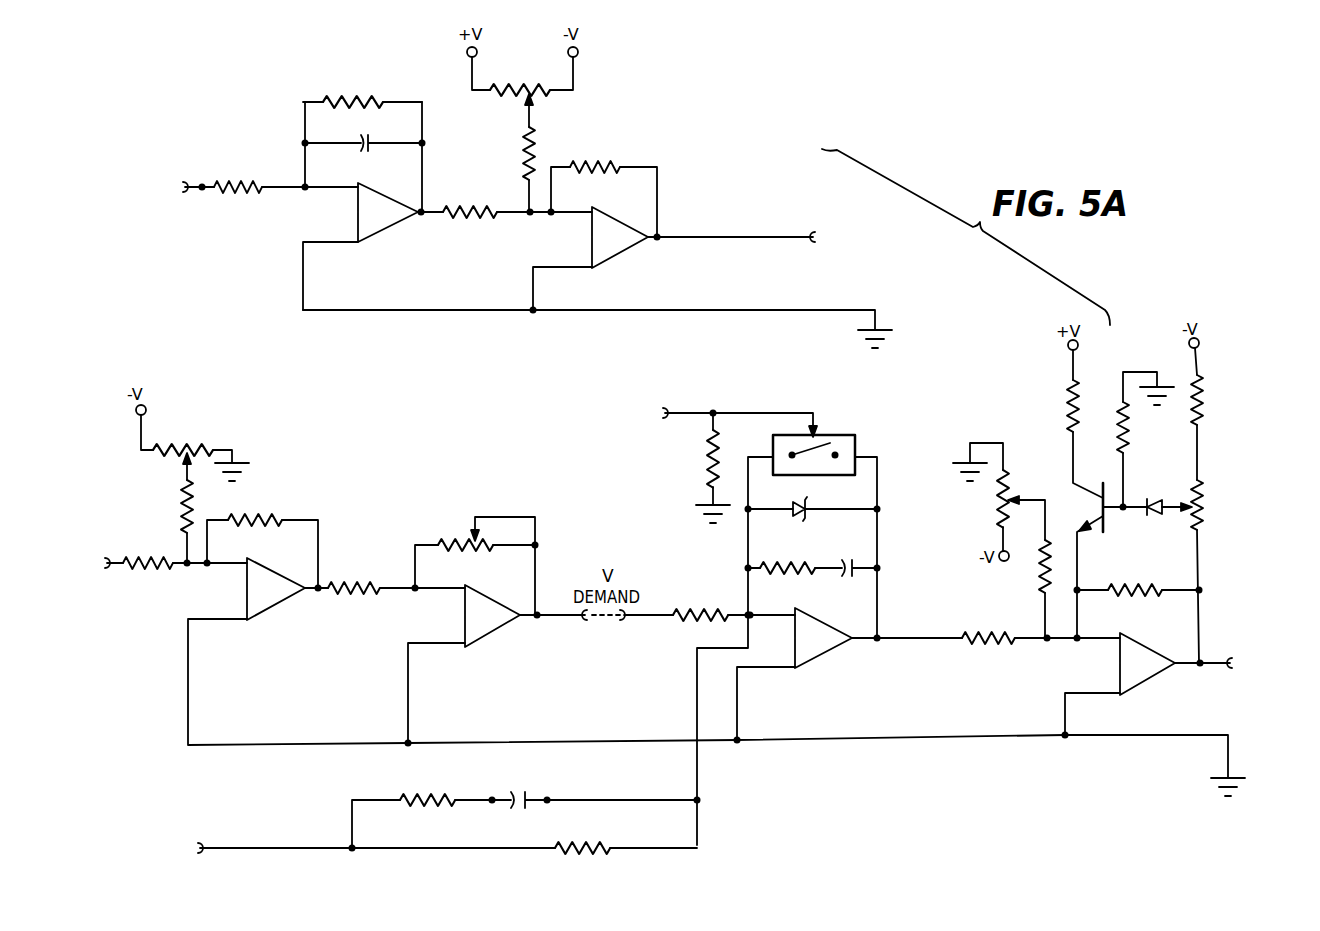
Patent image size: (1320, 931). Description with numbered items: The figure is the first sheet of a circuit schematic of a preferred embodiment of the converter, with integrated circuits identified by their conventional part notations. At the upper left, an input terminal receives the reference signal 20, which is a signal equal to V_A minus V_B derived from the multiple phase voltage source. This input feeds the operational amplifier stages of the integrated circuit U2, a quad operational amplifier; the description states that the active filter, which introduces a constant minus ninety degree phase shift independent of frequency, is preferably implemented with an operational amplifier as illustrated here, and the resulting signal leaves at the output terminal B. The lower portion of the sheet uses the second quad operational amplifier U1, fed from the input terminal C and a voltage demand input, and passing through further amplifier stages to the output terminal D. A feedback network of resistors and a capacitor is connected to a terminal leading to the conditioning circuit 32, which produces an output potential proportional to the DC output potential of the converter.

The reference signal 20 is at (197, 184).
The conditioning circuit 32 is at (277, 839).
The TL084 quad operational amplifier U1 is at (711, 626).
The TL084 quad operational amplifier U2 is at (503, 230).
The output terminal B is at (747, 234).
The input terminal C is at (163, 563).
The output terminal D is at (1220, 666).